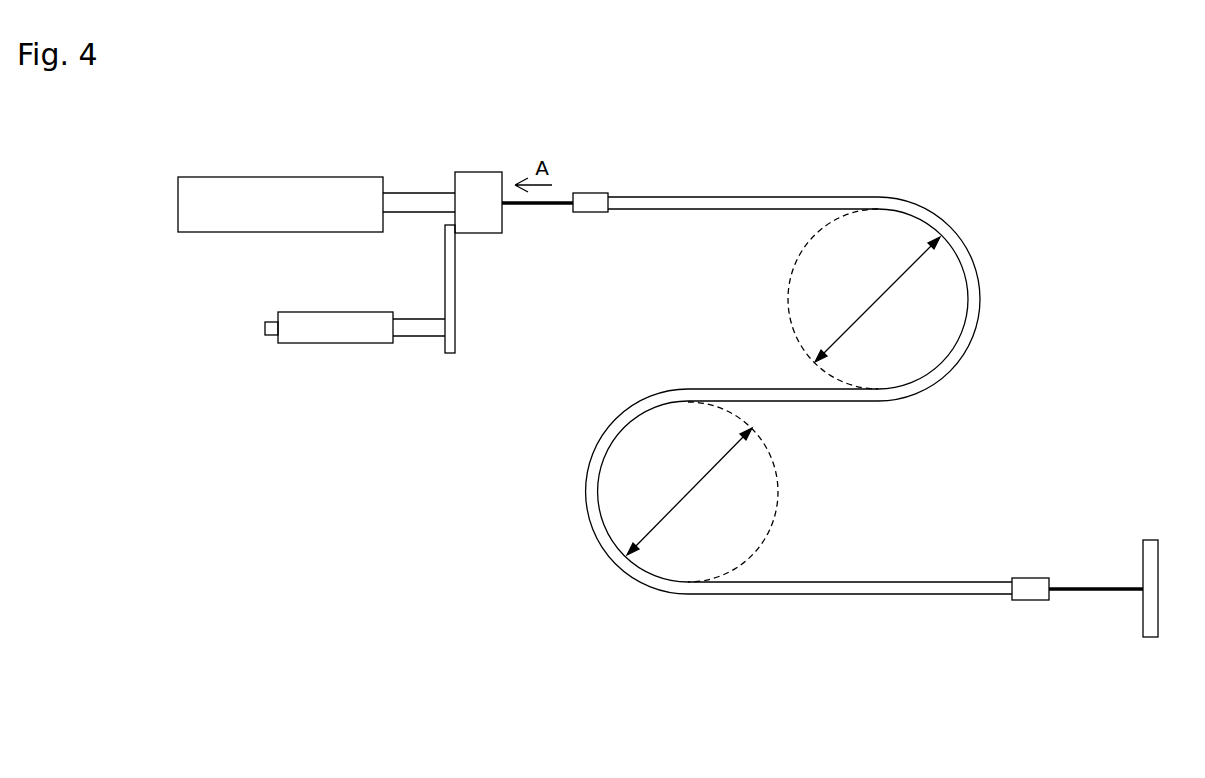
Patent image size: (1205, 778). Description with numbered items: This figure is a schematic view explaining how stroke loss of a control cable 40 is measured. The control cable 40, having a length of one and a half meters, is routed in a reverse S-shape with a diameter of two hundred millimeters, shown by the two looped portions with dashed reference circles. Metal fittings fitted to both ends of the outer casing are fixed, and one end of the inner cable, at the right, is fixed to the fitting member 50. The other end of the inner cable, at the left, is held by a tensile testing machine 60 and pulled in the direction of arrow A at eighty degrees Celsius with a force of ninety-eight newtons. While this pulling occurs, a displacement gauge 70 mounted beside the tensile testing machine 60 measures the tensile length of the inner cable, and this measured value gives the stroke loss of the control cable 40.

The control cable 40 is at (942, 195).
The fitting member 50 is at (1150, 637).
The tensile testing machine 60 is at (372, 162).
The displacement gauge 70 is at (334, 312).